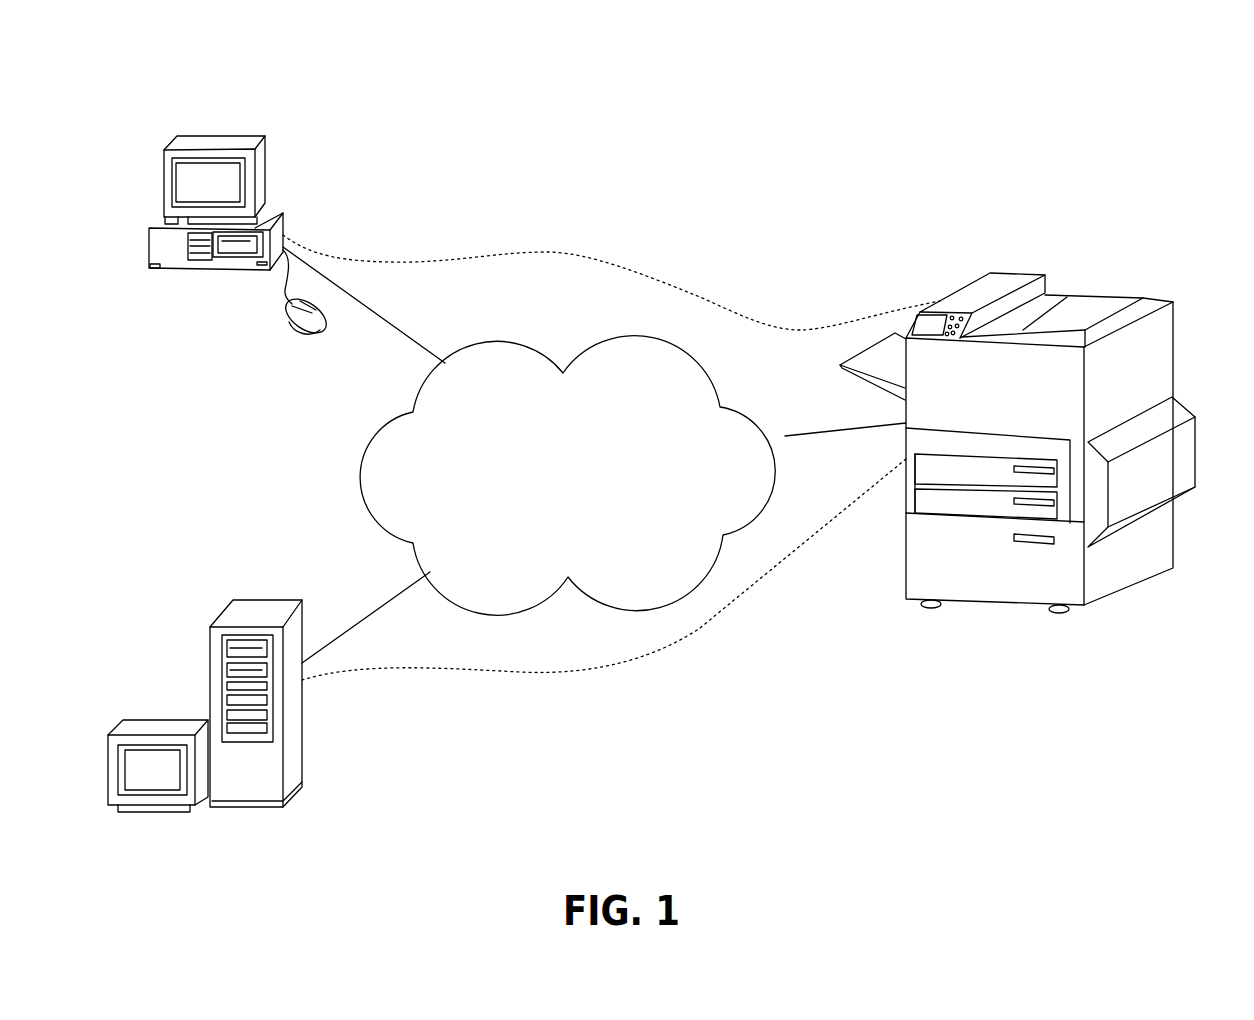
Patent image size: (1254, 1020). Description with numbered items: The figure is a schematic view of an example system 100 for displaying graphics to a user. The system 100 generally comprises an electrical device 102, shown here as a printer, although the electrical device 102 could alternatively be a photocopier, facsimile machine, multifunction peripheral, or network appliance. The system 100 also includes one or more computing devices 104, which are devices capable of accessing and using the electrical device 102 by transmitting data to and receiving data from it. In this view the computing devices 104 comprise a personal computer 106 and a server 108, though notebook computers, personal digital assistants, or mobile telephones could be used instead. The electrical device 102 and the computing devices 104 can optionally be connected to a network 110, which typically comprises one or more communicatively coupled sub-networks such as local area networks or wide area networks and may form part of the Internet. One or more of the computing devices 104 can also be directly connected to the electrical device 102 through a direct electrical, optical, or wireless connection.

The system 100 is at (1093, 102).
The electrical device 102 is at (1130, 270).
The computing devices 104 is at (297, 152).
The personal computer 106 is at (157, 255).
The server 108 is at (302, 753).
The network 110 is at (548, 497).